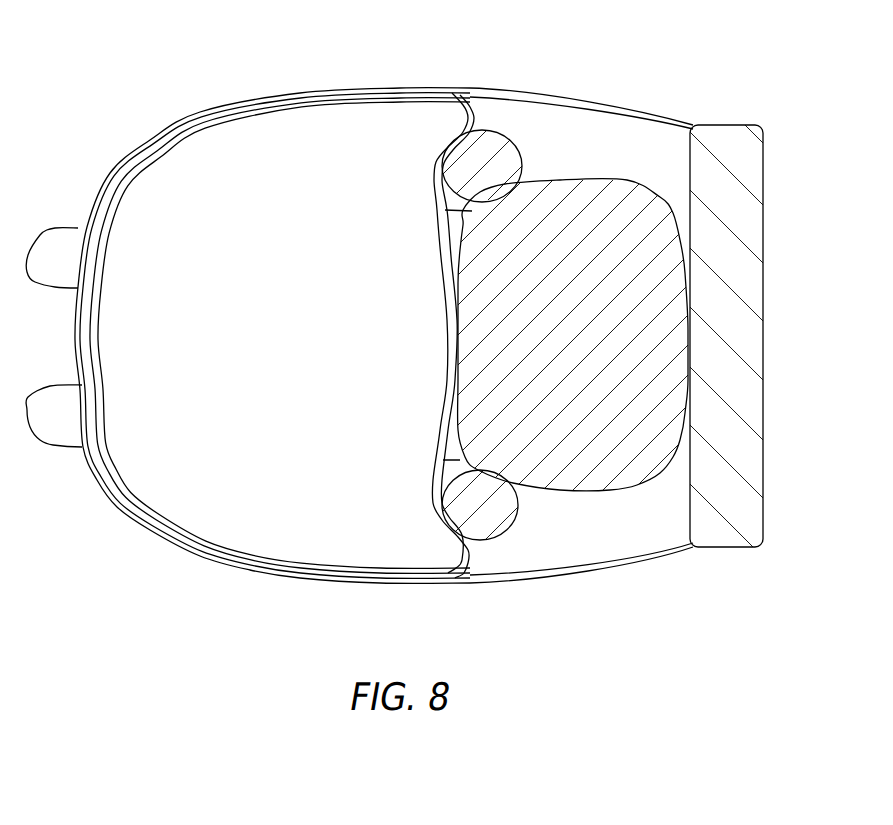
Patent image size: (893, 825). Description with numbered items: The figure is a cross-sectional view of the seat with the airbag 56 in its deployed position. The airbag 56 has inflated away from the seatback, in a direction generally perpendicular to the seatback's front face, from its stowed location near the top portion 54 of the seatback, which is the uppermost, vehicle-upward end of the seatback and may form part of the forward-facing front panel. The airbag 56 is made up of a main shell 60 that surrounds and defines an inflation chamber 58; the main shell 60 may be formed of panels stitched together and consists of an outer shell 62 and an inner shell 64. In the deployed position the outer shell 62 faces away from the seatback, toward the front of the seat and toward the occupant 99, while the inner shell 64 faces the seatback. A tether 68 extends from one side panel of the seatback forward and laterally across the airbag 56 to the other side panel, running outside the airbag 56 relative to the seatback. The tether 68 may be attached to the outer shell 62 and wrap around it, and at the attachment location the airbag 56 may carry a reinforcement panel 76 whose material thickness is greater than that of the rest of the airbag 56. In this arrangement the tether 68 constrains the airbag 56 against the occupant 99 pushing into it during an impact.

The top portion 54 is at (764, 188).
The airbag 56 is at (168, 538).
The inflation chamber 58 is at (185, 557).
The main shell 60 is at (205, 560).
The outer shell 62 is at (106, 420).
The inner shell 64 is at (447, 385).
The tether 68 is at (515, 92).
The reinforcement panel 76 is at (172, 121).
The occupant 99 is at (576, 180).